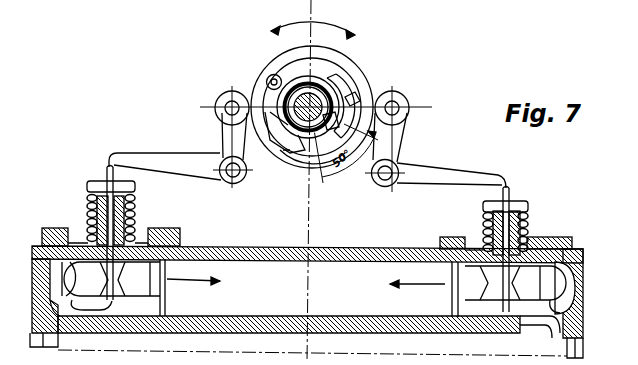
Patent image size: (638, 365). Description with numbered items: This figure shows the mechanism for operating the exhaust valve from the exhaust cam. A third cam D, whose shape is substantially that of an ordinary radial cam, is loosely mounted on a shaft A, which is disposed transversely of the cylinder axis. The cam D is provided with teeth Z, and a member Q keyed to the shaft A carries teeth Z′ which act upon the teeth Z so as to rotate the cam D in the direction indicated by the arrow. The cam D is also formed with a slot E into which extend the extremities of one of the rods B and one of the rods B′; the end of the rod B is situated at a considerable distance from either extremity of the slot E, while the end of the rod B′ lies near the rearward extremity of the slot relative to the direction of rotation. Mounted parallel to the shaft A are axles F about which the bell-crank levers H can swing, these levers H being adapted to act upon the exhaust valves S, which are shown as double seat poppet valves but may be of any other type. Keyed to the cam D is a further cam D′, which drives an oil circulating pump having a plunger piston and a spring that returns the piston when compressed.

The shaft A is at (278, 58).
The rod B′ is at (268, 77).
The teeth Z is at (272, 110).
The teeth Z′ is at (283, 124).
The slot E is at (330, 65).
The cam D is at (362, 80).
The member Q is at (368, 92).
The rod B is at (408, 111).
The axle F is at (222, 110).
The bell-crank lever H is at (207, 162).
The exhaust valve S is at (128, 290).
The cam D′ is at (282, 139).